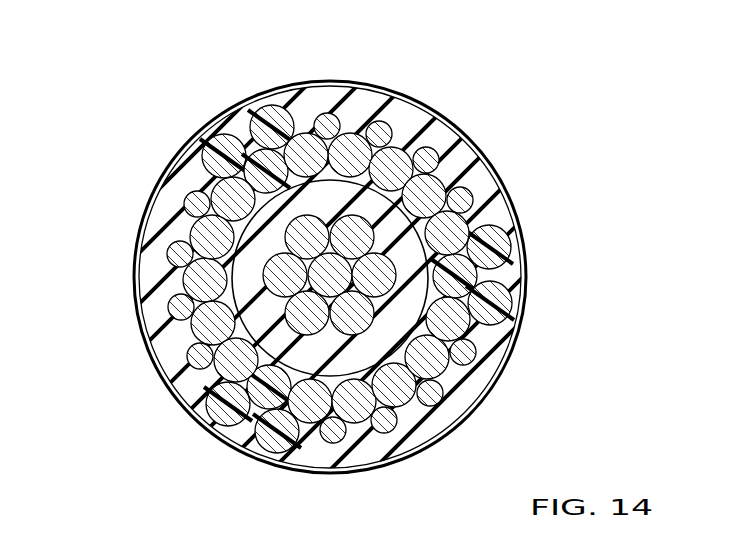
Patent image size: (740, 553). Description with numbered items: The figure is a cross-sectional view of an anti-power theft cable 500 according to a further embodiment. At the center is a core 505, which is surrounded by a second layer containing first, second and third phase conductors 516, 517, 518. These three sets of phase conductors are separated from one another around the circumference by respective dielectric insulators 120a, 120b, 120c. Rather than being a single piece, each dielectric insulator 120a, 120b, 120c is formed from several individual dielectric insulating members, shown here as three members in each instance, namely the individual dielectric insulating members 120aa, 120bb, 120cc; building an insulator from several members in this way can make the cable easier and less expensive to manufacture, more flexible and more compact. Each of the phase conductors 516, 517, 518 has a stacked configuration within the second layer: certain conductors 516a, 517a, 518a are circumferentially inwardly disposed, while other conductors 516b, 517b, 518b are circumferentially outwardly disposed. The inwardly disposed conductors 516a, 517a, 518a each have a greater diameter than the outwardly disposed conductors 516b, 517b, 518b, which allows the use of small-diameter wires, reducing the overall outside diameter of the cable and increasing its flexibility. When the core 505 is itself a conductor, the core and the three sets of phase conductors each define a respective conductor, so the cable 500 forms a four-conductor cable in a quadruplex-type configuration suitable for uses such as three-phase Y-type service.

The cable 500 is at (534, 58).
The core 505 is at (192, 325).
The individual dielectric insulating members 120aa is at (263, 112).
The dielectric insulator 120a is at (238, 128).
The individual dielectric insulating members 120bb is at (213, 415).
The dielectric insulator 120b is at (245, 425).
The individual dielectric insulating members 120cc is at (472, 192).
The dielectric insulator 120c is at (516, 300).
The second phase conductor 517 is at (405, 130).
The circumferentially inwardly disposed conductors 517a is at (410, 148).
The circumferentially outwardly disposed conductors 517b is at (297, 133).
The third phase conductor 518 is at (158, 270).
The circumferentially inwardly disposed conductors 518a is at (205, 192).
The circumferentially outwardly disposed conductors 518b is at (185, 232).
The first phase conductor 516 is at (415, 440).
The circumferentially inwardly disposed conductors 516a is at (420, 409).
The circumferentially outwardly disposed conductors 516b is at (317, 428).